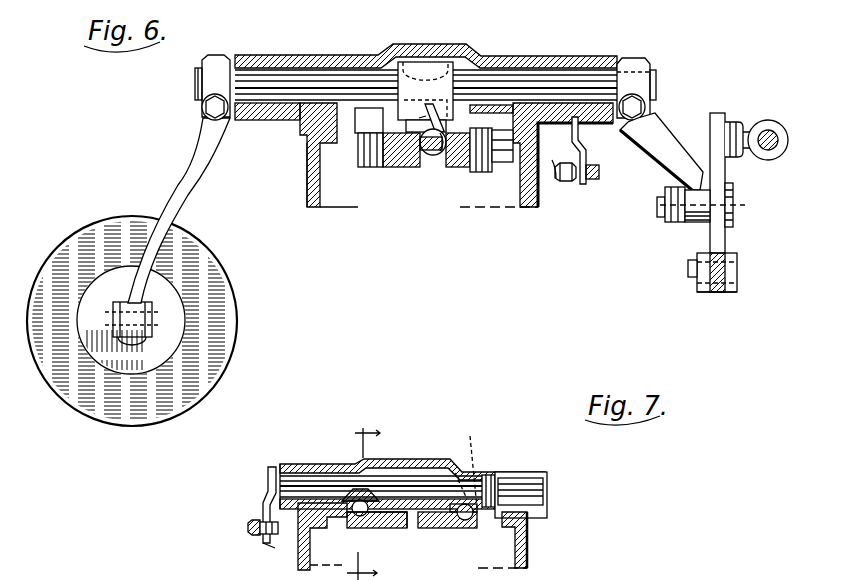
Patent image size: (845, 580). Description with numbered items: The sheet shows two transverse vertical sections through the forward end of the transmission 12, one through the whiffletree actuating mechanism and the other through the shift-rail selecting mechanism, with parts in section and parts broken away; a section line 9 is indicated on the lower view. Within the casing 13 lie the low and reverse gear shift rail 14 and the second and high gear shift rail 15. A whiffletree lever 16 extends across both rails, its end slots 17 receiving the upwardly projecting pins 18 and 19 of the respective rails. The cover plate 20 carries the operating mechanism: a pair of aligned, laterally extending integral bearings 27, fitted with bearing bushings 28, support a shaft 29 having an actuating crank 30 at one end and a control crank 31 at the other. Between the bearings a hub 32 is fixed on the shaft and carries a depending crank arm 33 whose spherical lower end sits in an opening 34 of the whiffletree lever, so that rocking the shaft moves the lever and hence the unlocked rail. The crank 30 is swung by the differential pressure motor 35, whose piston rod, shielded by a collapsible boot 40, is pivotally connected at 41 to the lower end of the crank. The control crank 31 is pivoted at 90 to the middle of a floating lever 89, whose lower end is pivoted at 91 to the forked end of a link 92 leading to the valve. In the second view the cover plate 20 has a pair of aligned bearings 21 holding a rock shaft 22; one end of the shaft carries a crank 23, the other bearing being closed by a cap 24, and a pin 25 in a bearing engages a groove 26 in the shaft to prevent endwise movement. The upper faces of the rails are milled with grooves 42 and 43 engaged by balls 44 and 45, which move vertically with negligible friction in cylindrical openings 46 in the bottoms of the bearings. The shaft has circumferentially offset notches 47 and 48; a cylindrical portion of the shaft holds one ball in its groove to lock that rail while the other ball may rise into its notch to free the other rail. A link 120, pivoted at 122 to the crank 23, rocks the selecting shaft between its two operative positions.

In FIG. 7, the section line 9 is at (363, 495).
In FIG. 6, the transmission 12 is at (545, 188).
In FIG. 7, the transmission 12 is at (532, 560).
In FIG. 6, the casing 13 is at (306, 190).
In FIG. 6, the low and reverse gear shift rail 14 is at (402, 168).
In FIG. 7, the low and reverse gear shift rail 14 is at (402, 530).
In FIG. 6, the second and high gear shift rail 15 is at (448, 170).
In FIG. 7, the second and high gear shift rail 15 is at (424, 530).
In FIG. 6, the whiffletree lever 16 is at (400, 124).
In FIG. 6, the slots 17 is at (356, 150).
In FIG. 6, the pin 18 is at (370, 150).
In FIG. 6, the pin 19 is at (500, 164).
In FIG. 6, the cover plate 20 is at (300, 132).
In FIG. 7, the cover plate 20 is at (540, 518).
In FIG. 7, the bearings 21 is at (312, 464).
In FIG. 7, the rock shaft 22 is at (414, 480).
In FIG. 6, the crank 23 is at (578, 140).
In FIG. 7, the crank 23 is at (266, 497).
In FIG. 7, the cap 24 is at (547, 492).
In FIG. 7, the pin 25 is at (474, 468).
In FIG. 7, the groove 26 is at (493, 475).
In FIG. 6, the bearings 27 is at (311, 56).
In FIG. 6, the bearing bushings 28 is at (596, 64).
In FIG. 6, the shaft 29 is at (505, 78).
In FIG. 6, the actuating crank 30 is at (190, 180).
In FIG. 6, the control crank 31 is at (660, 138).
In FIG. 6, the hub 32 is at (424, 62).
In FIG. 6, the crank arm 33 is at (432, 156).
In FIG. 6, the opening 34 is at (436, 112).
In FIG. 6, the motor 35 is at (232, 276).
In FIG. 6, the collapsible boot 40 is at (131, 320).
In FIG. 6, the pivotal connection 41 is at (152, 330).
In FIG. 7, the groove 42 is at (353, 518).
In FIG. 7, the groove 43 is at (472, 522).
In FIG. 7, the ball 44 is at (372, 530).
In FIG. 7, the ball 45 is at (462, 522).
In FIG. 7, the openings 46 is at (345, 503).
In FIG. 7, the notch 47 is at (358, 498).
In FIG. 7, the notch 48 is at (458, 470).
In FIG. 6, the floating lever 89 is at (728, 176).
In FIG. 6, the pivotal connection 90 is at (732, 208).
In FIG. 6, the pivotal connection 91 is at (735, 273).
In FIG. 6, the link 92 is at (715, 292).
In FIG. 6, the link 120 is at (590, 176).
In FIG. 7, the link 120 is at (247, 528).
In FIG. 6, the pivotal connection 122 is at (556, 178).
In FIG. 7, the pivotal connection 122 is at (266, 546).